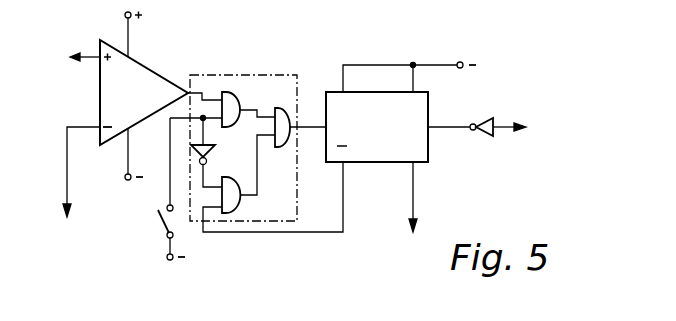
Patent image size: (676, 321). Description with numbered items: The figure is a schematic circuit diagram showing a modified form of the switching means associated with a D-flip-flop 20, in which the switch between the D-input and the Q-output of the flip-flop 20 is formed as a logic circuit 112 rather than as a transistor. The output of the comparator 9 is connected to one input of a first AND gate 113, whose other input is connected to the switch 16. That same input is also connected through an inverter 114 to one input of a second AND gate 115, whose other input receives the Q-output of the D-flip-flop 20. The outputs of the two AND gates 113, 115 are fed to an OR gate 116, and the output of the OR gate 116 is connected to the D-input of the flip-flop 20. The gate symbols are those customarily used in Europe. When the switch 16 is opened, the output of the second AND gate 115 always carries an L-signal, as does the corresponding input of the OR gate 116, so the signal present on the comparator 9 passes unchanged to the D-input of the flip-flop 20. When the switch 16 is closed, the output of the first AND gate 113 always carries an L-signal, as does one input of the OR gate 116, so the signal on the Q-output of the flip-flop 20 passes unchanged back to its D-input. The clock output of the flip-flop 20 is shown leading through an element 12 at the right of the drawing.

The comparator 9 is at (145, 77).
The output inverter 12 is at (493, 118).
The switch 16 is at (157, 223).
The D-flip-flop 20 is at (418, 108).
The logic circuit 112 is at (283, 215).
The first AND gate 113 is at (231, 95).
The inverter 114 is at (210, 150).
The second AND gate 115 is at (234, 217).
The OR gate 116 is at (288, 122).